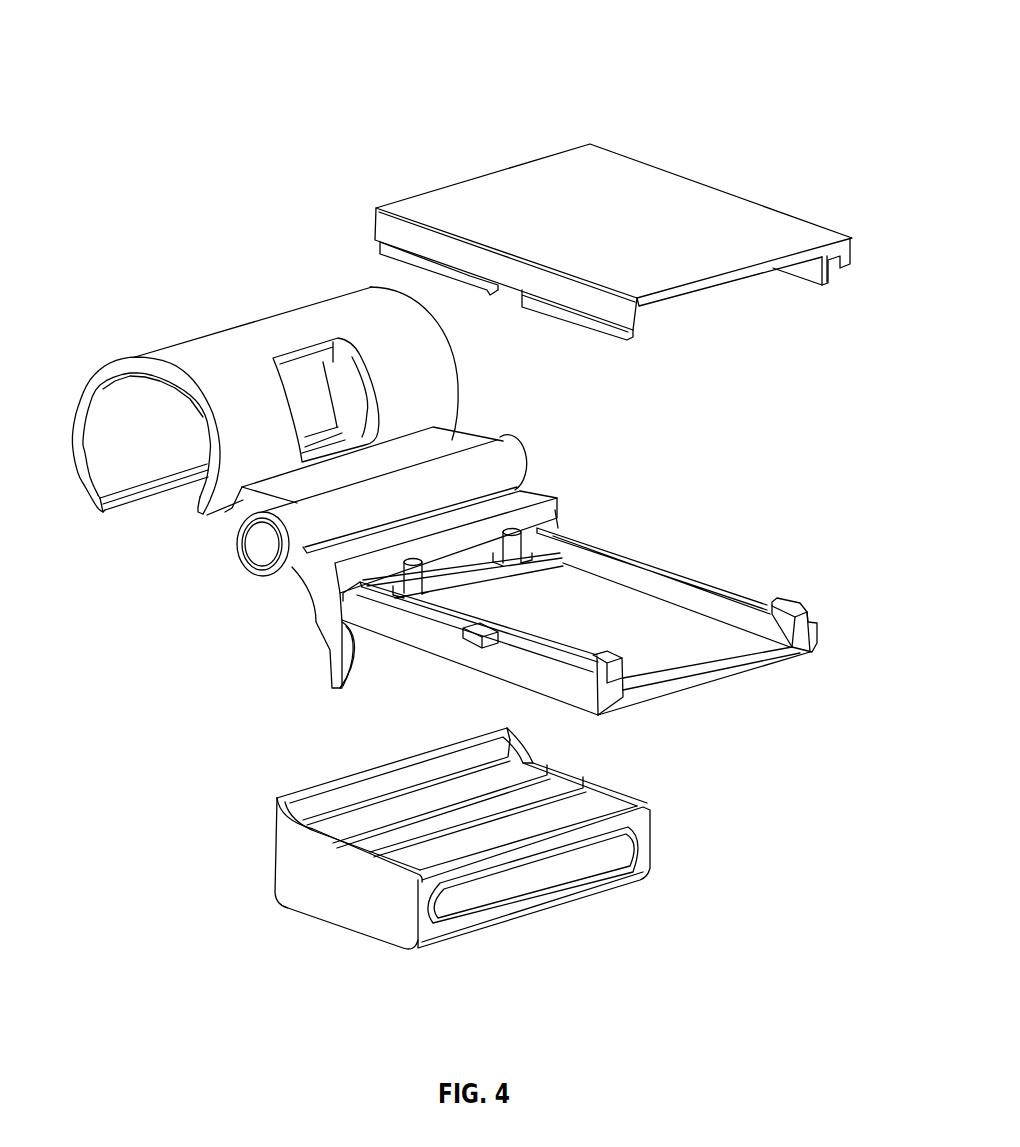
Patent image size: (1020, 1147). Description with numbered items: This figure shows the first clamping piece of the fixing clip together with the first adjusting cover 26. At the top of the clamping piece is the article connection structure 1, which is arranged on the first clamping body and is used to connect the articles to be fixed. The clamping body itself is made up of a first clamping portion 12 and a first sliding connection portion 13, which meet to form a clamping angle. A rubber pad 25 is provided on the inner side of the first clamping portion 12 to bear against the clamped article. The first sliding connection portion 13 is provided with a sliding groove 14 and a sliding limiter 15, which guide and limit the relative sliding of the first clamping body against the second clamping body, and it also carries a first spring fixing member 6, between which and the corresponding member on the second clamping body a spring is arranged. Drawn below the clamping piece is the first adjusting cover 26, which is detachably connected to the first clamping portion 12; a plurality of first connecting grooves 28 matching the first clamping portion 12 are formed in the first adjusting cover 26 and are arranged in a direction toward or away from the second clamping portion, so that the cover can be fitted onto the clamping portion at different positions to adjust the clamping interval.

The article connection structure 1 is at (228, 362).
The first sliding connection portion 13 is at (497, 508).
The first spring fixing member 6 is at (417, 572).
The sliding groove 14 is at (547, 640).
The sliding limiter 15 is at (602, 657).
The first clamping portion 12 is at (310, 659).
The rubber pad 25 is at (353, 673).
The first adjusting cover 26 is at (347, 885).
The first connecting grooves 28 is at (377, 833).